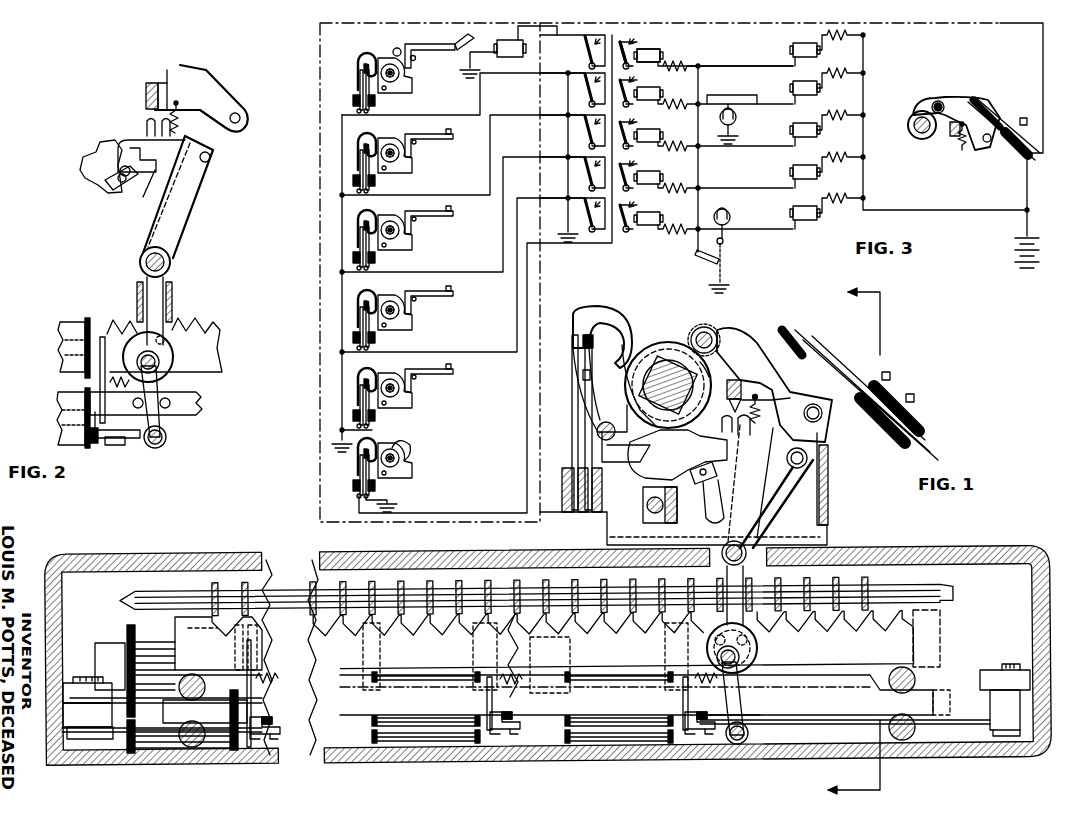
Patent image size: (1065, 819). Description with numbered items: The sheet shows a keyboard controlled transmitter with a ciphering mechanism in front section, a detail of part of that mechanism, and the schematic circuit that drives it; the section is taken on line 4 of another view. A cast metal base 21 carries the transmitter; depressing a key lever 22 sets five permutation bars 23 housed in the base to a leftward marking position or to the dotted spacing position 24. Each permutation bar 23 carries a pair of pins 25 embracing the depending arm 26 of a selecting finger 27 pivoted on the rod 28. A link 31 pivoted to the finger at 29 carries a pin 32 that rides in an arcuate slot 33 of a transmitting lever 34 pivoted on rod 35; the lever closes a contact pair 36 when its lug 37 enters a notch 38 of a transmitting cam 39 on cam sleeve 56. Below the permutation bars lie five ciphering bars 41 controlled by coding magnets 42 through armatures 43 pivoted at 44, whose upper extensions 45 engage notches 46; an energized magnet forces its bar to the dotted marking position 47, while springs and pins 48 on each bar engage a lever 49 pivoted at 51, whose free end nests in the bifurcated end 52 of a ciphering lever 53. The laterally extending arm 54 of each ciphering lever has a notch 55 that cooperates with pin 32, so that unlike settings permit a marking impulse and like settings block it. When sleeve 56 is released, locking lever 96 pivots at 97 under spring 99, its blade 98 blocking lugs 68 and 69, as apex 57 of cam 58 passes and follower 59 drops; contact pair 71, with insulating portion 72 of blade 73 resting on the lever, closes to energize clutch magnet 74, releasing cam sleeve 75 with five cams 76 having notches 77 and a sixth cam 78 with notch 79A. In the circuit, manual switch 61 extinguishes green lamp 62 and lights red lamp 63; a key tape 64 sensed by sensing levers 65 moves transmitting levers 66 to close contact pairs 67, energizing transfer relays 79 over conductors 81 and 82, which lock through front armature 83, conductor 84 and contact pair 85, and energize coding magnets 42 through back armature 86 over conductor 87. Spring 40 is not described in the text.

In FIG. 1, the cast metal base 21 is at (997, 549).
In FIG. 2, the key lever 22 is at (137, 287).
In FIG. 1, the key lever 22 is at (463, 580).
In FIG. 2, the permutation bar 23 is at (222, 364).
In FIG. 1, the permutation bar 23 is at (913, 635).
In FIG. 1, the spacing position of permutation bar 24 is at (943, 616).
In FIG. 2, the pins 25 is at (190, 343).
In FIG. 1, the pins 25 is at (753, 656).
In FIG. 2, the depending arm 26 is at (170, 322).
In FIG. 1, the depending arm 26 is at (748, 641).
In FIG. 2, the selecting finger 27 is at (197, 198).
In FIG. 1, the selecting finger 27 is at (812, 478).
In FIG. 2, the rod 28 is at (171, 260).
In FIG. 1, the rod 28 is at (747, 552).
In FIG. 2, the pivot of link 29 is at (211, 157).
In FIG. 1, the pivot of link 29 is at (807, 457).
In FIG. 2, the link 31 is at (150, 196).
In FIG. 1, the link 31 is at (808, 470).
In FIG. 2, the pin 32 is at (120, 188).
In FIG. 1, the pin 32 is at (708, 486).
In FIG. 2, the arcuate slot 33 is at (104, 186).
In FIG. 1, the arcuate slot 33 is at (710, 505).
In FIG. 2, the transmitting lever 34 is at (81, 159).
In FIG. 1, the transmitting lever 34 is at (612, 462).
In FIG. 1, the rod 35 is at (597, 430).
In FIG. 1, the contact pair 36 is at (575, 362).
In FIG. 1, the lug 37 is at (645, 478).
In FIG. 1, the notch 38 is at (706, 382).
In FIG. 1, the transmitting cam 39 is at (688, 318).
In FIG. 1, the spring 40 is at (272, 676).
In FIG. 2, the ciphering bar 41 is at (199, 401).
In FIG. 1, the ciphering bar 41 is at (925, 692).
In FIG. 2, the coding magnet 42 is at (73, 323).
In FIG. 3, the coding magnet 42 is at (818, 57).
In FIG. 1, the coding magnet 42 is at (150, 745).
In FIG. 2, the armature 43 is at (100, 337).
In FIG. 1, the armature 43 is at (250, 747).
In FIG. 1, the pivot 44 is at (278, 738).
In FIG. 1, the upper extension 45 is at (268, 720).
In FIG. 1, the notch 46 is at (245, 708).
In FIG. 1, the marking position of ciphering bar 47 is at (952, 705).
In FIG. 2, the pins 48 is at (161, 416).
In FIG. 1, the pins 48 is at (746, 700).
In FIG. 1, the lever 49 is at (746, 730).
In FIG. 2, the pivot 51 is at (158, 448).
In FIG. 1, the pivot 51 is at (740, 745).
In FIG. 1, the bifurcated end 52 is at (708, 652).
In FIG. 2, the ciphering lever 53 is at (152, 216).
In FIG. 1, the ciphering lever 53 is at (778, 508).
In FIG. 2, the laterally extending arm 54 is at (146, 128).
In FIG. 1, the laterally extending arm 54 is at (752, 428).
In FIG. 2, the notch 55 is at (125, 144).
In FIG. 1, the notch 55 is at (680, 452).
In FIG. 3, the cam sleeve 56 is at (921, 135).
In FIG. 1, the cam sleeve 56 is at (688, 362).
In FIG. 3, the apex of cam 57 is at (934, 104).
In FIG. 1, the apex of cam 57 is at (703, 326).
In FIG. 3, the cam 58 is at (910, 135).
In FIG. 1, the cam 58 is at (663, 347).
In FIG. 3, the follower 59 is at (940, 102).
In FIG. 1, the follower 59 is at (710, 326).
In FIG. 3, the manual switch 61 is at (700, 261).
In FIG. 3, the green signal lamp 62 is at (730, 213).
In FIG. 3, the red signal lamp 63 is at (736, 118).
In FIG. 3, the key tape 64 is at (458, 44).
In FIG. 3, the sensing lever 65 is at (425, 46).
In FIG. 3, the transmitting lever 66 is at (360, 62).
In FIG. 3, the contact pair 67 is at (359, 92).
In FIG. 2, the lug 68 is at (144, 100).
In FIG. 1, the lug 68 is at (758, 397).
In FIG. 2, the lug 69 is at (167, 80).
In FIG. 1, the lug 69 is at (727, 420).
In FIG. 3, the contact pair 71 is at (1000, 112).
In FIG. 1, the contact pair 71 is at (813, 343).
In FIG. 1, the insulating portion 72 is at (780, 328).
In FIG. 1, the blade 73 is at (870, 385).
In FIG. 3, the clutch magnet 74 is at (522, 62).
In FIG. 3, the cam sleeve 75 is at (398, 48).
In FIG. 3, the cam 76 is at (379, 58).
In FIG. 3, the notch 77 is at (401, 73).
In FIG. 3, the sixth cam 78 is at (401, 462).
In FIG. 3, the transfer relay 79 is at (650, 68).
In FIG. 3, the notch 79A is at (400, 446).
In FIG. 3, the conductor 81 is at (480, 98).
In FIG. 3, the conductor 82 is at (342, 160).
In FIG. 3, the front armature 83 is at (632, 36).
In FIG. 3, the conductor 84 is at (560, 245).
In FIG. 3, the contact pair 85 is at (359, 472).
In FIG. 3, the back armature 86 is at (588, 92).
In FIG. 3, the conductor 87 is at (752, 68).
In FIG. 2, the locking lever 96 is at (207, 69).
In FIG. 3, the locking lever 96 is at (960, 100).
In FIG. 1, the locking lever 96 is at (740, 333).
In FIG. 2, the pivot 97 is at (242, 112).
In FIG. 1, the pivot 97 is at (822, 410).
In FIG. 3, the blade 98 is at (955, 138).
In FIG. 1, the blade 98 is at (742, 385).
In FIG. 3, the spring 99 is at (964, 146).
In FIG. 1, the spring 99 is at (778, 400).
In FIG. 1, the section line 4 is at (863, 542).